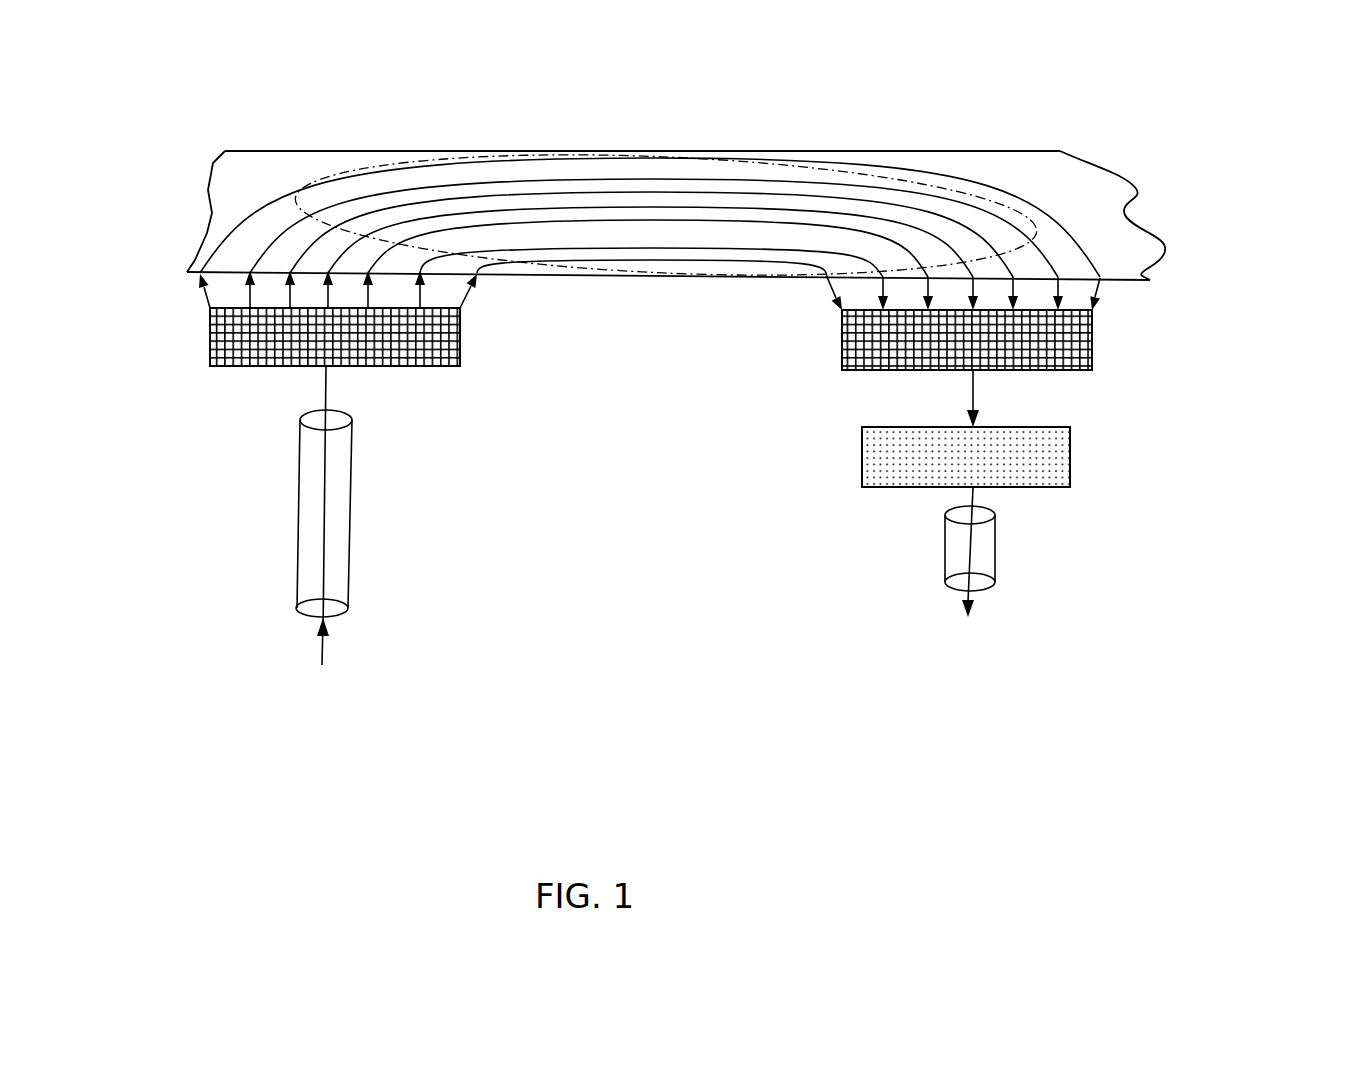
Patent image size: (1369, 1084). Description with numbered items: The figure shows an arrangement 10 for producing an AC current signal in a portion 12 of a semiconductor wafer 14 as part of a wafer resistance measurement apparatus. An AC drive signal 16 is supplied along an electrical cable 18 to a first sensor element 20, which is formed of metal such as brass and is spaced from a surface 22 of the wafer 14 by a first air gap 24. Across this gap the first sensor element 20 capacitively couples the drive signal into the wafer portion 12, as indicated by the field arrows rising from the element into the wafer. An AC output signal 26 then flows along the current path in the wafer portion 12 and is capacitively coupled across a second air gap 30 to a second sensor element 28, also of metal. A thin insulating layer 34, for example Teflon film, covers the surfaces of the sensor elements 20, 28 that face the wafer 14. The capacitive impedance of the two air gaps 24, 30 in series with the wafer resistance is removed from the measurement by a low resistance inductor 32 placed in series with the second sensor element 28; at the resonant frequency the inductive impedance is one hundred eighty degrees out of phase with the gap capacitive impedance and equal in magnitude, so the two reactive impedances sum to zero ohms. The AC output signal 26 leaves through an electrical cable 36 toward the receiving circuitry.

The arrangement 10 is at (1360, 672).
The wafer portion 12 is at (654, 141).
The semiconductor wafer 14 is at (268, 158).
The AC drive signal 16 is at (323, 564).
The electrical cable 18 is at (352, 520).
The first sensor element 20 is at (210, 340).
The wafer surface 22 is at (1127, 290).
The first air gap 24 is at (338, 290).
The AC output signal 26 is at (959, 557).
The second sensor element 28 is at (1092, 352).
The second air gap 30 is at (934, 312).
The inductor 32 is at (1070, 457).
The thin insulating layer 34 is at (489, 318).
The electrical cable 36 is at (997, 550).